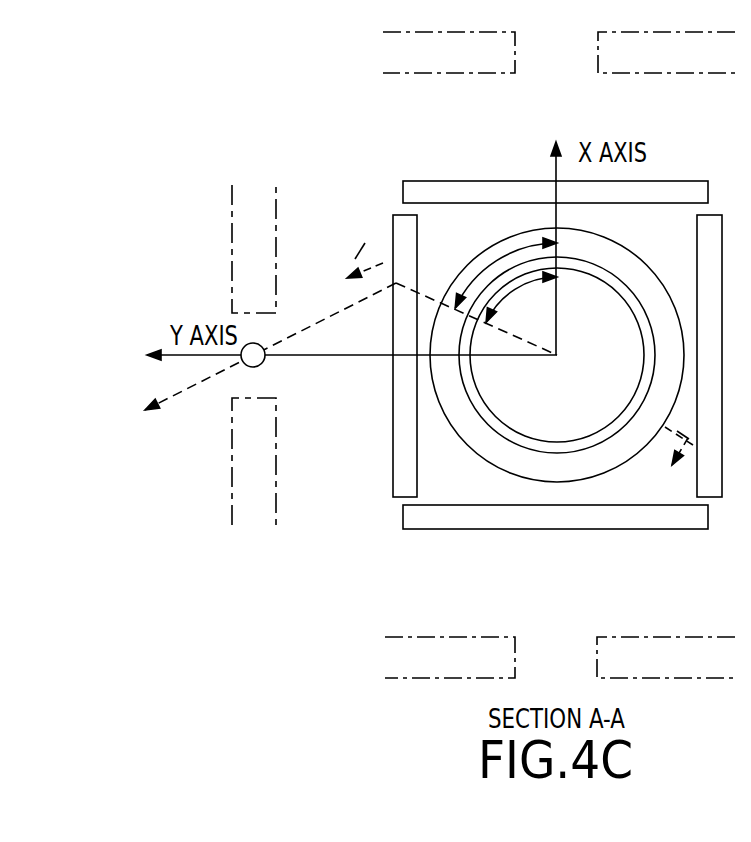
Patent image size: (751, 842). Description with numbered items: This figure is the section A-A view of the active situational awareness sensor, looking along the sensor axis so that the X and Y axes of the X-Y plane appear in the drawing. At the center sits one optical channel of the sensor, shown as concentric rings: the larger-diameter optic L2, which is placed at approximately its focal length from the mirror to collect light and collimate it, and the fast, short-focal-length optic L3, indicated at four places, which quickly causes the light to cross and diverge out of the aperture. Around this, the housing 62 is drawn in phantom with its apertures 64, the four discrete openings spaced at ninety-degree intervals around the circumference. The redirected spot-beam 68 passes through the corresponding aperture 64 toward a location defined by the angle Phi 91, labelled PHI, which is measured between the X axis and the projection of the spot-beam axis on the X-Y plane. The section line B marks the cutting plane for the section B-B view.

The housing 62 is at (232, 480).
The apertures 64 is at (230, 380).
The redirected spot-beam 68 is at (263, 364).
The Phi 91 is at (497, 260).
The optic L2 is at (628, 249).
The optic L3 is at (393, 542).
The Phi PHI is at (521, 297).
The section B- B is at (521, 338).